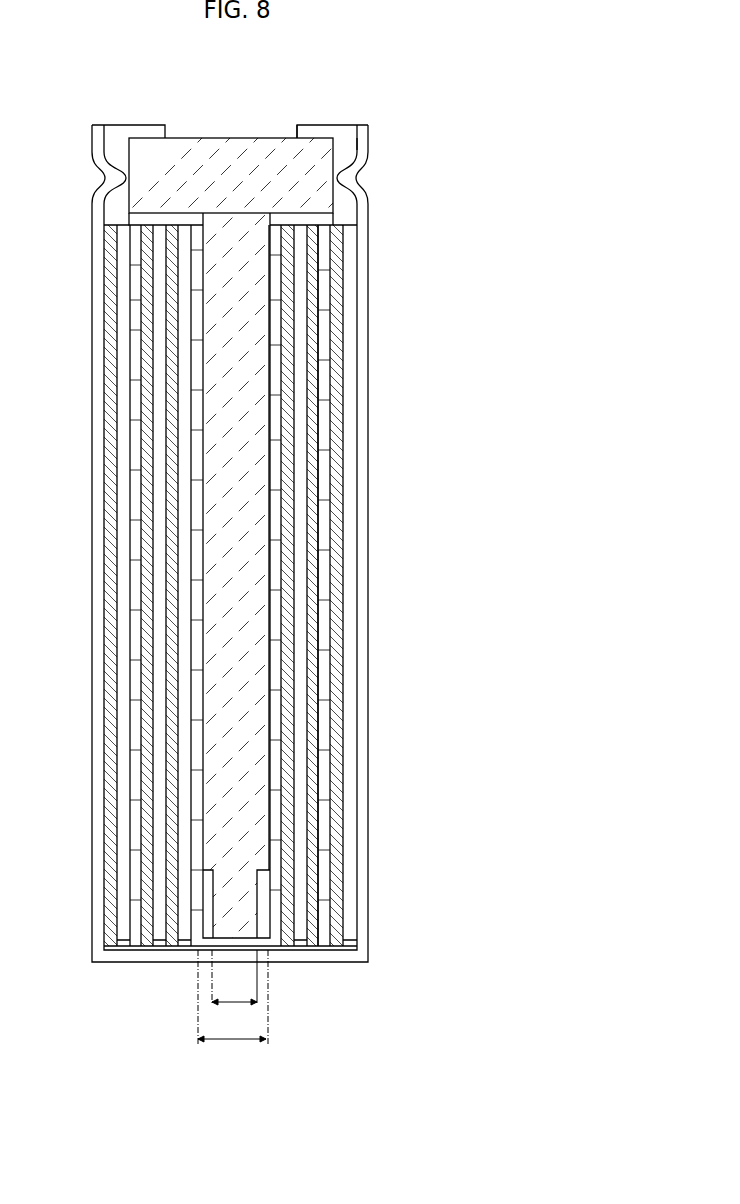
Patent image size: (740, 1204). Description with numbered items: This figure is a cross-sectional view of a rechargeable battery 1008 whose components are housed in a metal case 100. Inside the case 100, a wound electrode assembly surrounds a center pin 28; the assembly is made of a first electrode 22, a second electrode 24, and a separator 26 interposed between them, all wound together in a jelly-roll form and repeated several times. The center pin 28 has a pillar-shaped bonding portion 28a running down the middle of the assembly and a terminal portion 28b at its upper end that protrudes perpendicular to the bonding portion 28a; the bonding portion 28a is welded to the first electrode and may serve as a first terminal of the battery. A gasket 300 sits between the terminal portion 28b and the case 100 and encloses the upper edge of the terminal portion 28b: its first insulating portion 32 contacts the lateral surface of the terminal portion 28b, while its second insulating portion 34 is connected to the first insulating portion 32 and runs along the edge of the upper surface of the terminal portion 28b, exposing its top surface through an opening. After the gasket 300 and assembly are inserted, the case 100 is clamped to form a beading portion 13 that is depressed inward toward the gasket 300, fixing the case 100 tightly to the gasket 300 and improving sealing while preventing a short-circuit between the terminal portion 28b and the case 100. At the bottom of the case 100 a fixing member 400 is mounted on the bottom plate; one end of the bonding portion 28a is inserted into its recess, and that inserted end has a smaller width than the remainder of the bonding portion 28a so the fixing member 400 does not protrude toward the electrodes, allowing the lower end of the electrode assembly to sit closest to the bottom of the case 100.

The rechargeable battery 1008 is at (217, 63).
The case 100 is at (92, 524).
The beading portion 13 is at (358, 181).
The gasket 300 is at (121, 133).
The second insulating portion 34 is at (316, 133).
The first insulating portion 32 is at (338, 156).
The center pin 28 is at (284, 550).
The bonding portion 28a is at (247, 260).
The terminal portion 28b is at (325, 192).
The first electrode 22 is at (135, 947).
The second electrode 24 is at (125, 893).
The separator 26 is at (108, 845).
The fixing member 400 is at (262, 880).